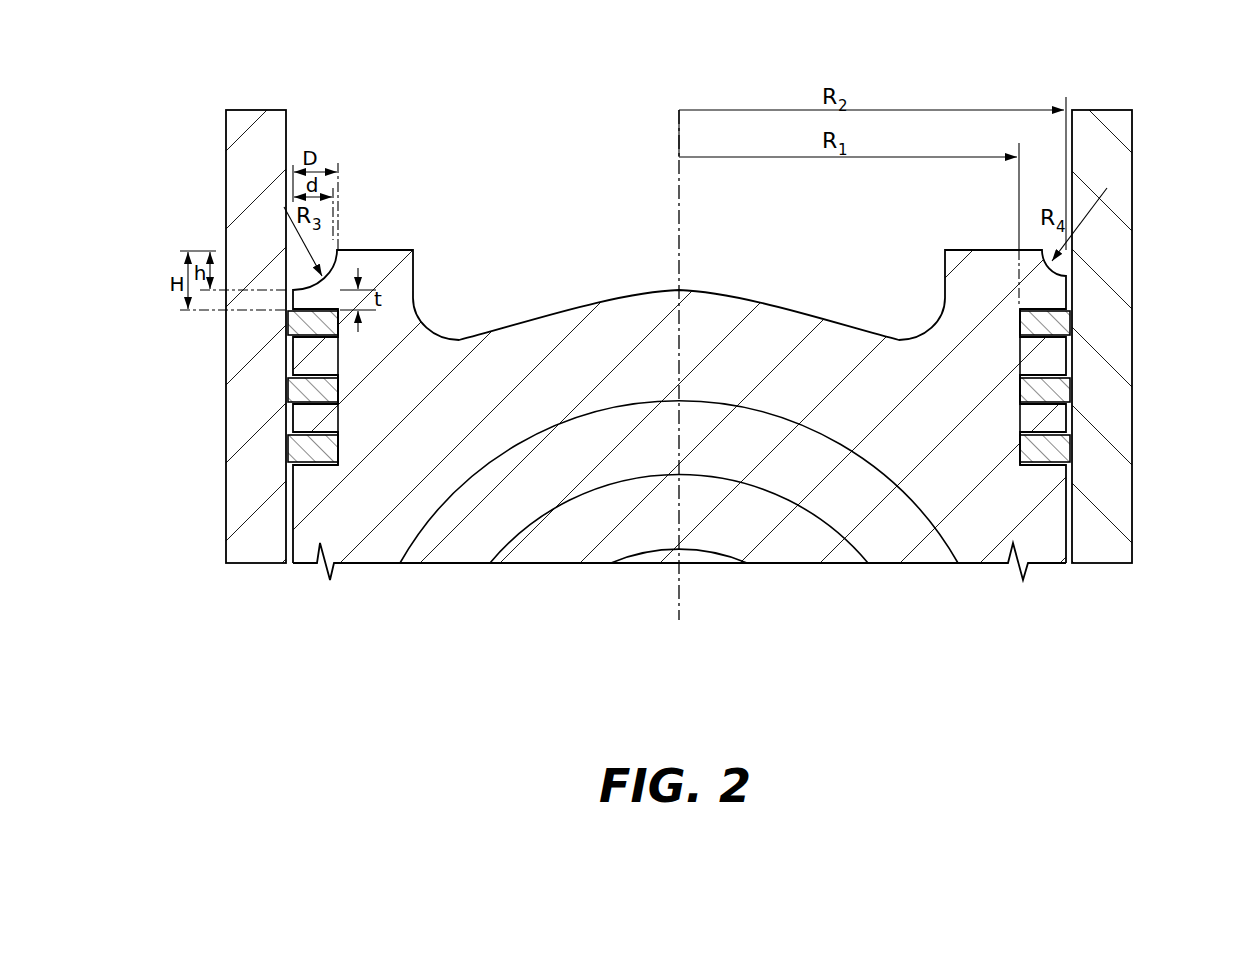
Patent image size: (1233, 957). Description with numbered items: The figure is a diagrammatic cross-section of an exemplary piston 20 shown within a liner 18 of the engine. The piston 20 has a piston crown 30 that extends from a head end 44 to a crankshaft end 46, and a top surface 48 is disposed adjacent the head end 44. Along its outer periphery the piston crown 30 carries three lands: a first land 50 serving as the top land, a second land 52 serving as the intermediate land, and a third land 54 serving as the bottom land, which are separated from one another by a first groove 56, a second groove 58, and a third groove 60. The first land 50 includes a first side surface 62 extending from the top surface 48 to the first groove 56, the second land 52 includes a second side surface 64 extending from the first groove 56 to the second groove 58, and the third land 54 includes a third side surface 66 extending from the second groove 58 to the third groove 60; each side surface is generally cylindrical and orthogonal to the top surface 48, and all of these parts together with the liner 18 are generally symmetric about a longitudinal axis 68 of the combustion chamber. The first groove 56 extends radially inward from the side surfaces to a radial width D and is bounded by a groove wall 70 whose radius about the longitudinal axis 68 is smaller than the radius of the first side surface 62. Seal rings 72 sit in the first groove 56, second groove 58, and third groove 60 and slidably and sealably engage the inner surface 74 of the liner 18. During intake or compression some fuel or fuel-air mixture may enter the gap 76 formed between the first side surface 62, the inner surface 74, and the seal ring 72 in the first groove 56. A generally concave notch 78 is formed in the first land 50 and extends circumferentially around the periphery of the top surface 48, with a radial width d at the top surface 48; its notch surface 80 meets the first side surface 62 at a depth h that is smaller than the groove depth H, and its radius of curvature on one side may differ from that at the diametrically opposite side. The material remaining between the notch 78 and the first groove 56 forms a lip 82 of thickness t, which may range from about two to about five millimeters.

The liner 18 is at (232, 430).
The piston 20 is at (351, 96).
The piston crown 30 is at (588, 364).
The head end 44 is at (515, 240).
The crankshaft end 46 is at (563, 606).
The top surface 48 is at (955, 248).
The first land 50 is at (290, 304).
The second land 52 is at (1055, 357).
The third land 54 is at (1057, 417).
The first groove 56 is at (334, 376).
The second groove 58 is at (330, 412).
The third groove 60 is at (308, 467).
The first side surface 62 is at (289, 340).
The second side surface 64 is at (288, 360).
The third side surface 66 is at (287, 413).
The longitudinal axis 68 is at (679, 212).
The groove wall 70 is at (315, 342).
The seal rings 72 is at (1067, 323).
The inner surface 74 is at (283, 513).
The gap 76 is at (290, 292).
The notch 78 is at (338, 257).
The notch surface 80 is at (308, 290).
The lip 82 is at (290, 308).